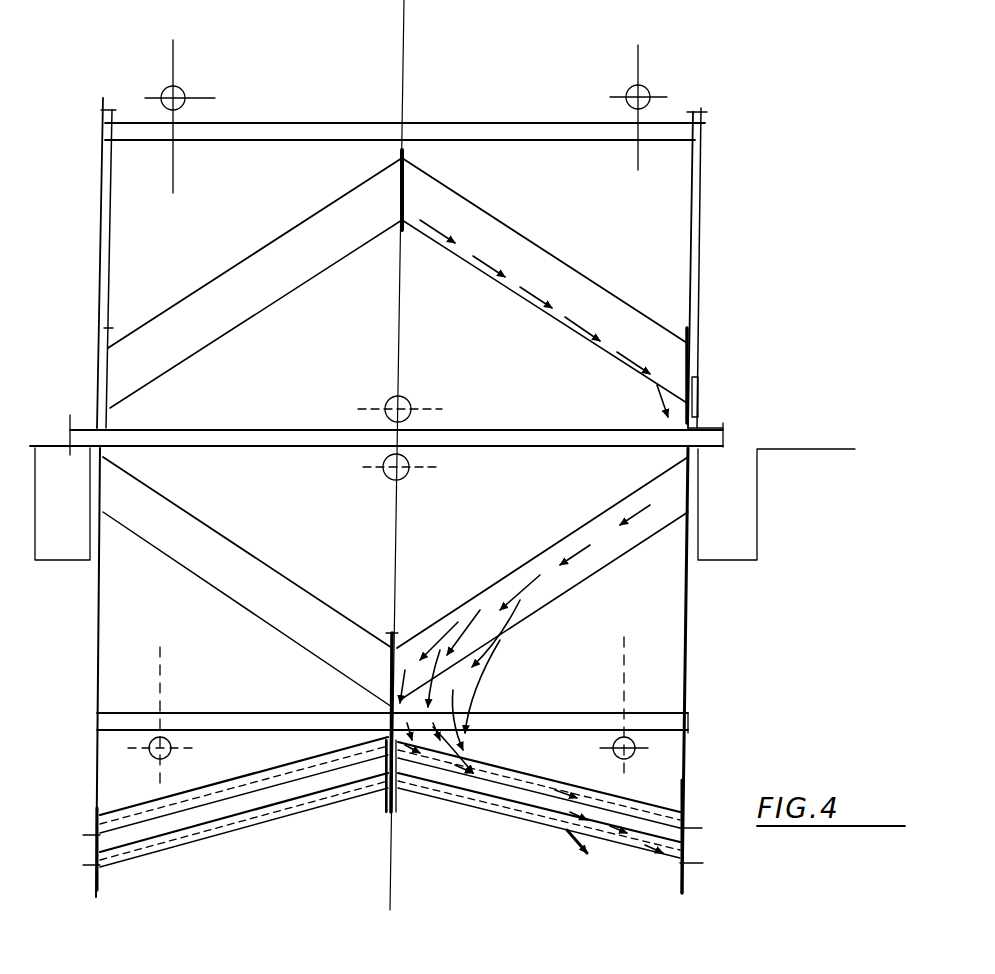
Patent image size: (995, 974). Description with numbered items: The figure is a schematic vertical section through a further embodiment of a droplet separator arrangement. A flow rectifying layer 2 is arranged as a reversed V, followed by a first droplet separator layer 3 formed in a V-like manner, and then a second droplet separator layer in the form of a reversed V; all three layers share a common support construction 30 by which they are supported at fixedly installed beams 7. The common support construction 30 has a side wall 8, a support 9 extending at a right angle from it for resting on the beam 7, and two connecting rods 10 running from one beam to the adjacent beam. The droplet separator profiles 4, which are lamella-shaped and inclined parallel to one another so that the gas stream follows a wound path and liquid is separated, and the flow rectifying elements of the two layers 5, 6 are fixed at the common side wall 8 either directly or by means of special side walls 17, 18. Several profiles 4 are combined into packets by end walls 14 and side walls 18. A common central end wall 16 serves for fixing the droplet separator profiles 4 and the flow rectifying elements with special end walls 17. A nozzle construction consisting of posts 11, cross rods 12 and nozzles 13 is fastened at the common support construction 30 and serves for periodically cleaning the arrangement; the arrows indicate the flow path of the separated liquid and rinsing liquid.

The flow rectifying layer 2 is at (245, 808).
The first droplet separator layer 3 is at (293, 290).
The droplet separator profile 4 is at (547, 313).
The layer 5 is at (293, 773).
The layer 6 is at (307, 802).
The beam 7 is at (50, 458).
The side wall 8 is at (688, 647).
The support 9 is at (720, 425).
The connecting rod 10 is at (512, 428).
The post 11 is at (700, 250).
The cross rod 12 is at (453, 137).
The nozzle 13 is at (633, 95).
The end wall 14 is at (405, 183).
The common central end wall 16 is at (390, 703).
The special end wall 17 is at (680, 807).
The side wall 18 is at (687, 338).
The common support construction 30 is at (690, 590).